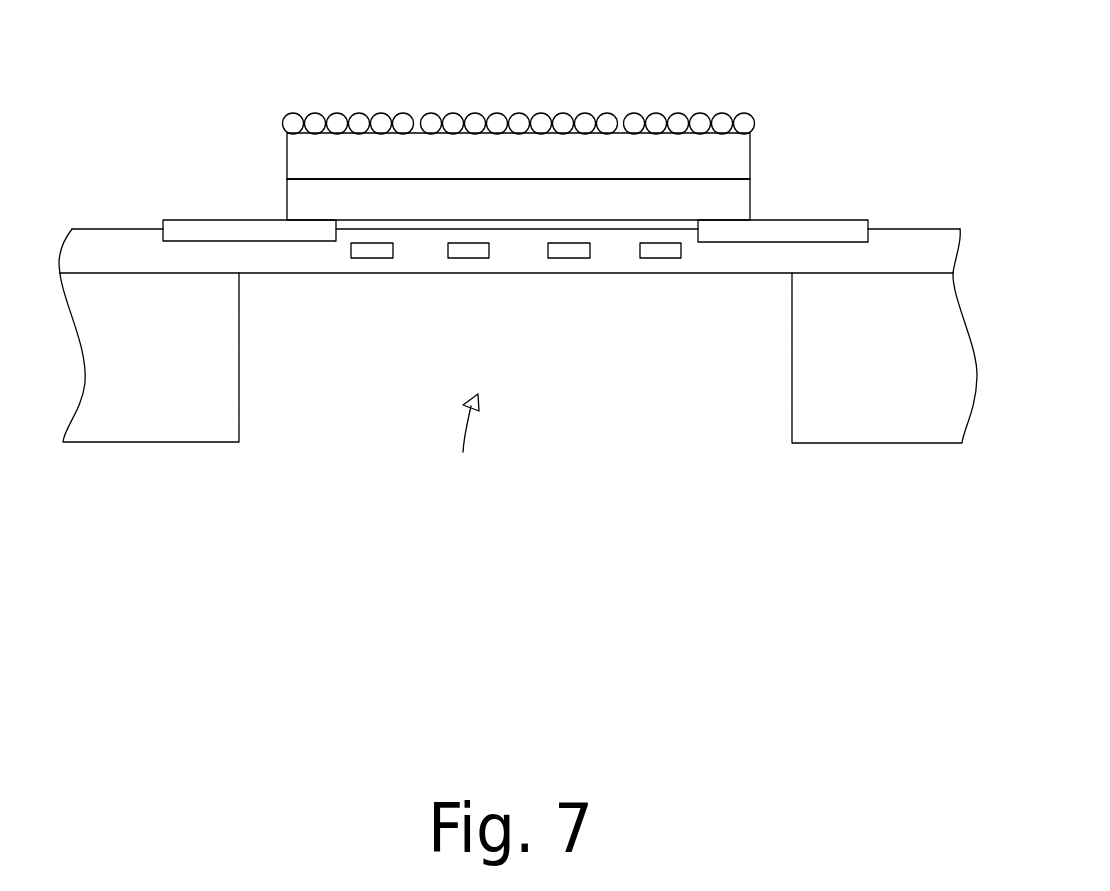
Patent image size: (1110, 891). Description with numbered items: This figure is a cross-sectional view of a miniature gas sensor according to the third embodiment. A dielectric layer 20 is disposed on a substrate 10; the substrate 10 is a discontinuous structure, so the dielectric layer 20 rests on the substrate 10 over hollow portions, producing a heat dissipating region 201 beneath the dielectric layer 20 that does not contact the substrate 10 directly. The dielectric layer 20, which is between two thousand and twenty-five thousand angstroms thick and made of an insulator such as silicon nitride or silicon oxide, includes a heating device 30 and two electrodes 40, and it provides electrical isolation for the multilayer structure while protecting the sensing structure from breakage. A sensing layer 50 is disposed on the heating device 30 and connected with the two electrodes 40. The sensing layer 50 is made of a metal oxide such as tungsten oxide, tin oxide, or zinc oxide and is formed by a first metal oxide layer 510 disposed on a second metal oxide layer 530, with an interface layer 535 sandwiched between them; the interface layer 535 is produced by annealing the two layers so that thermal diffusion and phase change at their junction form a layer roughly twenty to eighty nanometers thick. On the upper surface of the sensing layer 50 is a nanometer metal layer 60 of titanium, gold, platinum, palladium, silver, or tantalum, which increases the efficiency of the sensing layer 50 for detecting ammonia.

The substrate 10 is at (210, 442).
The dielectric layer 20 is at (110, 228).
The heat dissipating region 201 is at (462, 449).
The heating device 30 is at (364, 250).
The electrodes 40 is at (183, 228).
The sensing layer 50 is at (629, 138).
The first metal oxide layer 510 is at (751, 150).
The second metal oxide layer 530 is at (751, 208).
The interface layer 535 is at (567, 178).
The nanometer metal layer 60 is at (292, 116).